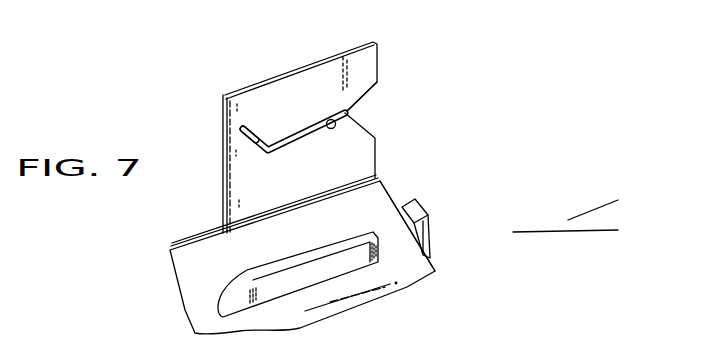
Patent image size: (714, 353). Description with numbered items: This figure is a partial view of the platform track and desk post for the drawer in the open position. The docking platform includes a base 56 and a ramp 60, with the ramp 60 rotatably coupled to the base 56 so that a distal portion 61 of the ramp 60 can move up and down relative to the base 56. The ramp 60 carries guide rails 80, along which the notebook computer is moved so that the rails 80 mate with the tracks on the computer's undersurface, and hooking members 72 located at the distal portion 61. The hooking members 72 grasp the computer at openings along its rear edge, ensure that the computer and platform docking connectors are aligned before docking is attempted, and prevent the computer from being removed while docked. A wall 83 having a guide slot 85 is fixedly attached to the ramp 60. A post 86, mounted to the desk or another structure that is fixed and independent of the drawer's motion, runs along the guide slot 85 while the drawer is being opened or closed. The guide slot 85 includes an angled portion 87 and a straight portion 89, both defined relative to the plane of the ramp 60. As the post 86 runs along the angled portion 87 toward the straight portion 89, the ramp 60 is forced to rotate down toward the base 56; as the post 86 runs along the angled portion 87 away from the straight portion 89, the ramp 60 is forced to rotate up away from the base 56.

The base 56 is at (547, 233).
The ramp 60 is at (226, 273).
The distal portion 61 is at (392, 194).
The hooking members 72 is at (420, 207).
The guide rails 80 is at (291, 262).
The wall 83 is at (308, 70).
The guide slot 85 is at (374, 96).
The post 86 is at (337, 124).
The angled portion 87 is at (251, 125).
The straight portion 89 is at (300, 124).